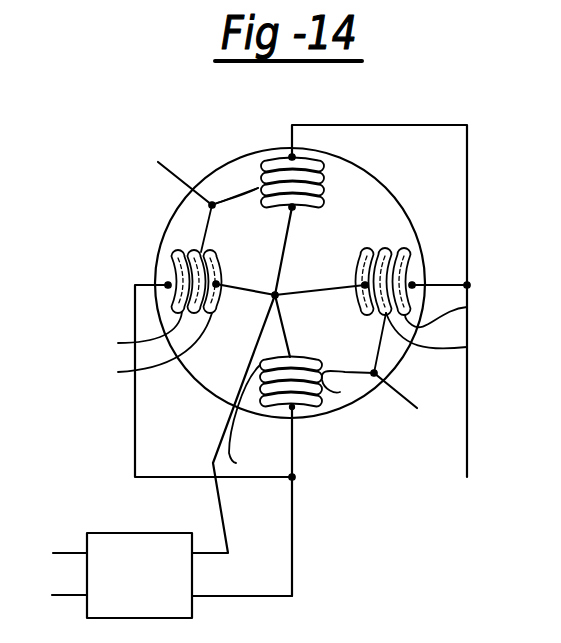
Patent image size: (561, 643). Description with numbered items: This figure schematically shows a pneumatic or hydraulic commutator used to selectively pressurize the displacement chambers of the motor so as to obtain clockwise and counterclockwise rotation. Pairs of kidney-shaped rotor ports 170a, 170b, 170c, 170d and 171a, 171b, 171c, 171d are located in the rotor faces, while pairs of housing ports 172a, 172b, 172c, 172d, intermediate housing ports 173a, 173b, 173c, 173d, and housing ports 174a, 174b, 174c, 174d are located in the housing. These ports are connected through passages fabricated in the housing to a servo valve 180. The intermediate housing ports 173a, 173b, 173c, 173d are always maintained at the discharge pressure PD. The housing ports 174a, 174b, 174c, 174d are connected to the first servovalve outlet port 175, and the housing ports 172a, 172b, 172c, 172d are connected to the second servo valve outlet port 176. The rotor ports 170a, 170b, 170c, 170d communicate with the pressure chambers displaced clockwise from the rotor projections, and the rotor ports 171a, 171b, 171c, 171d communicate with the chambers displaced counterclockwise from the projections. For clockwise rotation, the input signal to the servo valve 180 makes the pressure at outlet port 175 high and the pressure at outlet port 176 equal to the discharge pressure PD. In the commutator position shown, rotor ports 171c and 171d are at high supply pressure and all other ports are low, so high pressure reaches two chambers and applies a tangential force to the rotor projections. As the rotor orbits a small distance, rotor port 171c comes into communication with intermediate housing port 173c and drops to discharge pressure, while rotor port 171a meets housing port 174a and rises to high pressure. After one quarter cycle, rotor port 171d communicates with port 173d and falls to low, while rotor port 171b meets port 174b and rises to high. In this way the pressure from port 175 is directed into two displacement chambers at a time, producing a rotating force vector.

The rotor port 170a is at (327, 172).
The rotor port 170b is at (405, 258).
The rotor port 170c is at (328, 388).
The rotor port 170d is at (196, 249).
The rotor port 171a is at (323, 197).
The rotor port 171b is at (378, 250).
The rotor port 171c is at (330, 392).
The rotor port 171d is at (216, 250).
The housing port 172a is at (290, 134).
The housing port 172b is at (467, 379).
The housing port 172c is at (255, 408).
The housing port 172d is at (181, 381).
The intermediate housing port 173a is at (258, 185).
The intermediate housing port 173b is at (456, 343).
The intermediate housing port 173c is at (231, 470).
The intermediate housing port 173d is at (137, 353).
The housing port 174a is at (258, 200).
The housing port 174b is at (367, 314).
The housing port 174c is at (236, 396).
The housing port 174d is at (207, 369).
The servovalve outlet port 175 is at (225, 556).
The servo valve outlet port 176 is at (222, 597).
The servo valve 180 is at (140, 497).
The discharge pressure PD is at (284, 289).